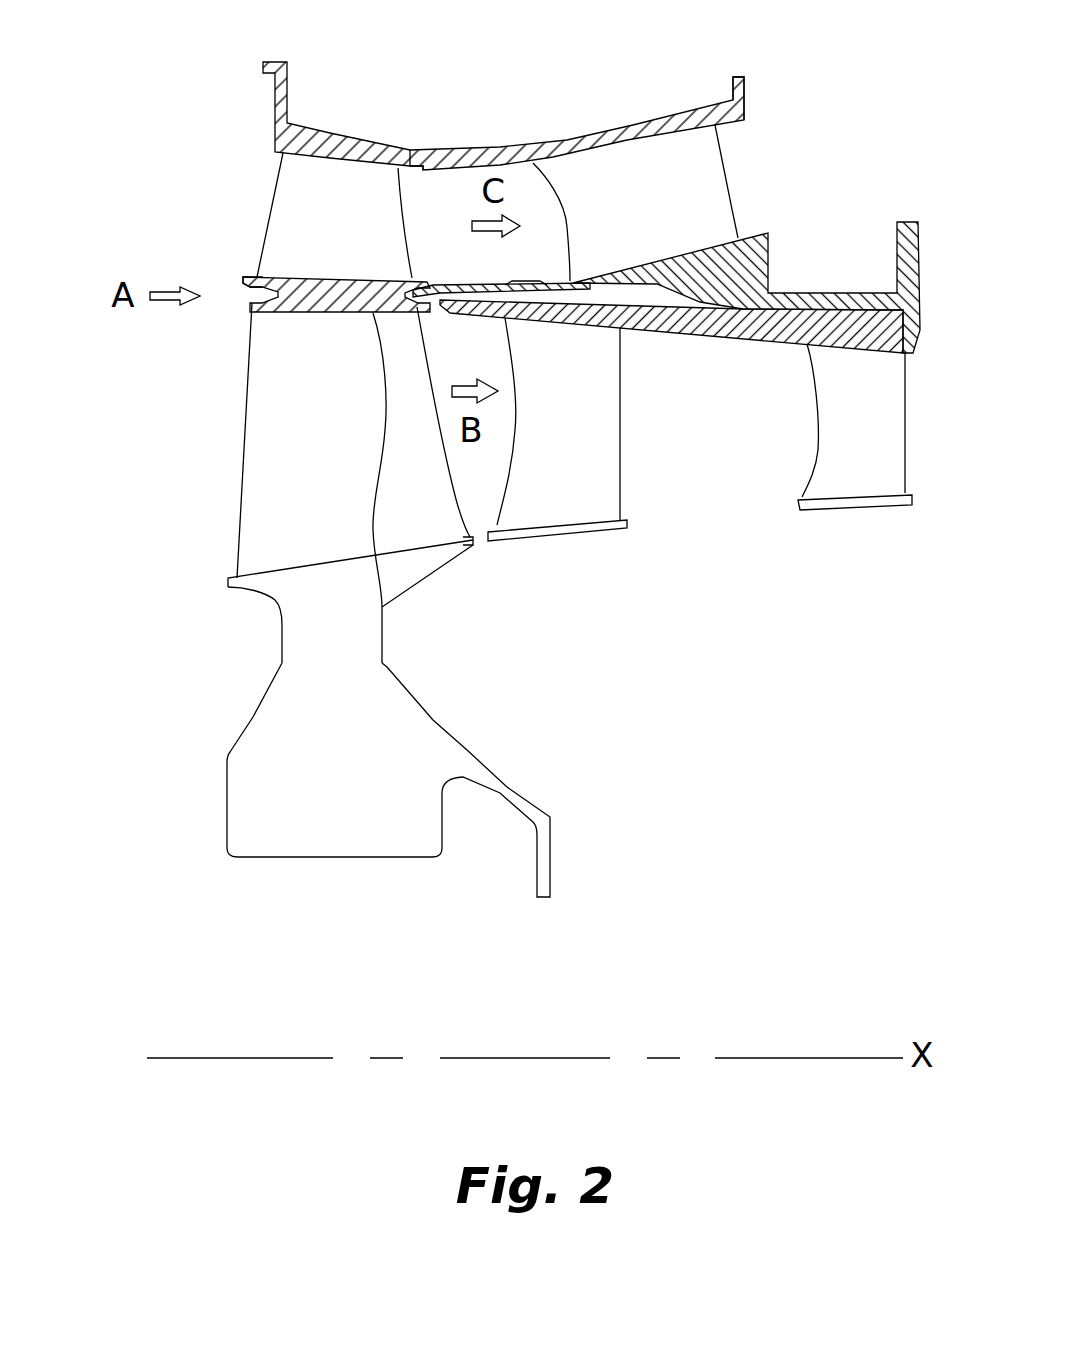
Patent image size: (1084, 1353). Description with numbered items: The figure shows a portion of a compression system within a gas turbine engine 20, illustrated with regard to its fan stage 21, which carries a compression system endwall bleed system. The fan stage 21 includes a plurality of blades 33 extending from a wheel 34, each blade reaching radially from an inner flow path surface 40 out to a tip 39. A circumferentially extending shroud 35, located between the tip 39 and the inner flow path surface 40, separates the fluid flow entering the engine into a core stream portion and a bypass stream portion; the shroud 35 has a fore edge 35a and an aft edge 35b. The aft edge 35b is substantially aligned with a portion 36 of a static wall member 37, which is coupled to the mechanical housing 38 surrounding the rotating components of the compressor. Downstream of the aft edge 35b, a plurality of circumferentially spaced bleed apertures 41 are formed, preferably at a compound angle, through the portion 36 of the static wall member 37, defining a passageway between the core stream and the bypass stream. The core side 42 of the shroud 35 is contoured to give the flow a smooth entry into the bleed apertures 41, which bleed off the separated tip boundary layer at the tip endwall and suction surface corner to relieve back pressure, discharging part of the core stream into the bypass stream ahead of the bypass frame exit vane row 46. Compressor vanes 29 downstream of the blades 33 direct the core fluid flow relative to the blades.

The gas turbine engine 20 is at (808, 112).
The fan stage 21 is at (288, 587).
The compressor vanes 29 is at (592, 480).
The blades 33 is at (288, 507).
The wheel 34 is at (272, 793).
The shroud 35 is at (322, 317).
The fore edge 35a is at (243, 277).
The aft edge 35b is at (412, 282).
The portion of static wall member 36 is at (433, 308).
The static wall member 37 is at (470, 318).
The mechanical housing 38 is at (733, 74).
The tip 39 is at (343, 162).
The inner flow path surface 40 is at (430, 540).
The bleed apertures 41 is at (500, 283).
The core side of shroud 42 is at (383, 600).
The bypass frame exit vane row 46 is at (630, 187).